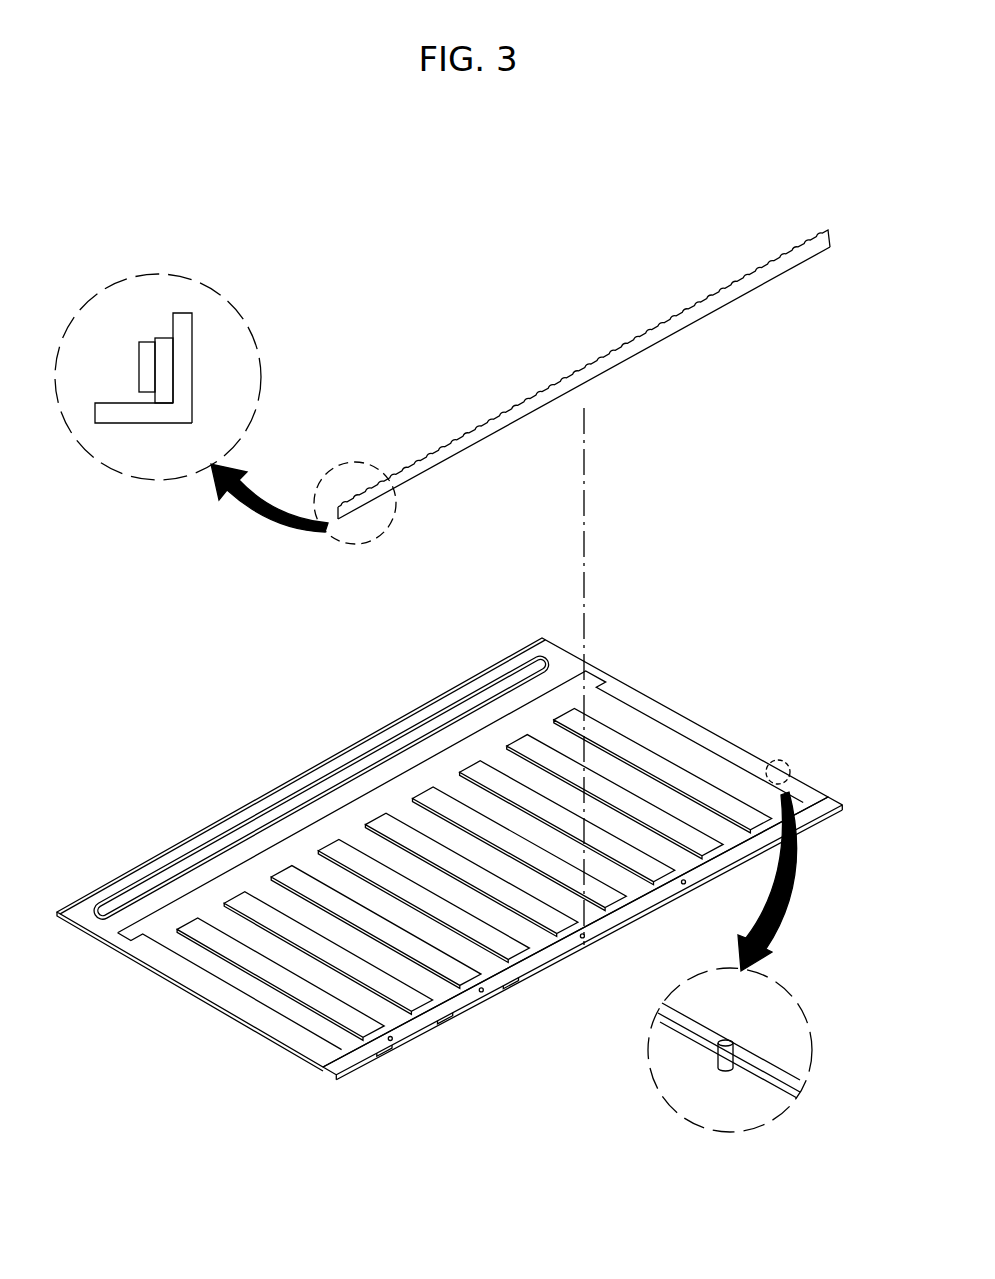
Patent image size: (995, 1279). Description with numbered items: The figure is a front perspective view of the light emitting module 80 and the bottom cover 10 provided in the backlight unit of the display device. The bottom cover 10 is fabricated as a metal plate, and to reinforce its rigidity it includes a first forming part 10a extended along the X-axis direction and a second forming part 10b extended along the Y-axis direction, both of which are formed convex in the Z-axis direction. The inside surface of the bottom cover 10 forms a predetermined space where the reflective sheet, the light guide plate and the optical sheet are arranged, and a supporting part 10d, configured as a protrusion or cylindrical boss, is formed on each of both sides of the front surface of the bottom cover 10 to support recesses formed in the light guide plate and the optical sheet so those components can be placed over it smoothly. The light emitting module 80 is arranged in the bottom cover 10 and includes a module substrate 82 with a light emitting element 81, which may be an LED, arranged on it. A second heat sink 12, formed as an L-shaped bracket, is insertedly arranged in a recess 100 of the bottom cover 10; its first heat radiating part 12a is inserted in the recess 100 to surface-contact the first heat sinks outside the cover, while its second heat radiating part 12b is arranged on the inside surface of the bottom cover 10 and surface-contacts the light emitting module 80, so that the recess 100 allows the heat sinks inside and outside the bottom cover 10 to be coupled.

The bottom cover 10 is at (469, 868).
The first forming part 10a is at (145, 890).
The second forming part 10b is at (672, 778).
The supporting part 10d is at (732, 1040).
The recess 100 is at (323, 1068).
The second heat sink 12 is at (457, 435).
The first heat radiating part 12a is at (122, 415).
The second heat radiating part 12b is at (187, 363).
The light emitting module 80 is at (264, 339).
The light emitting element 81 is at (147, 350).
The module substrate 82 is at (162, 335).